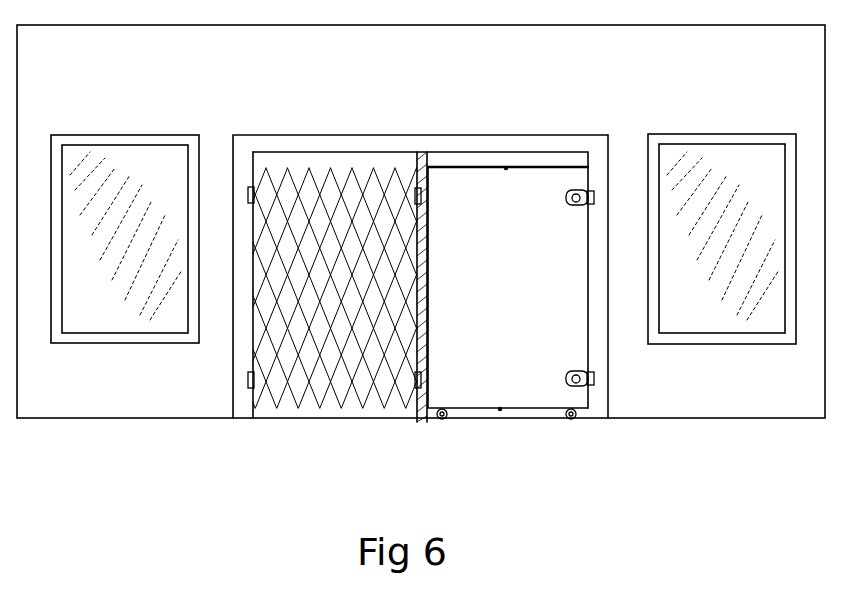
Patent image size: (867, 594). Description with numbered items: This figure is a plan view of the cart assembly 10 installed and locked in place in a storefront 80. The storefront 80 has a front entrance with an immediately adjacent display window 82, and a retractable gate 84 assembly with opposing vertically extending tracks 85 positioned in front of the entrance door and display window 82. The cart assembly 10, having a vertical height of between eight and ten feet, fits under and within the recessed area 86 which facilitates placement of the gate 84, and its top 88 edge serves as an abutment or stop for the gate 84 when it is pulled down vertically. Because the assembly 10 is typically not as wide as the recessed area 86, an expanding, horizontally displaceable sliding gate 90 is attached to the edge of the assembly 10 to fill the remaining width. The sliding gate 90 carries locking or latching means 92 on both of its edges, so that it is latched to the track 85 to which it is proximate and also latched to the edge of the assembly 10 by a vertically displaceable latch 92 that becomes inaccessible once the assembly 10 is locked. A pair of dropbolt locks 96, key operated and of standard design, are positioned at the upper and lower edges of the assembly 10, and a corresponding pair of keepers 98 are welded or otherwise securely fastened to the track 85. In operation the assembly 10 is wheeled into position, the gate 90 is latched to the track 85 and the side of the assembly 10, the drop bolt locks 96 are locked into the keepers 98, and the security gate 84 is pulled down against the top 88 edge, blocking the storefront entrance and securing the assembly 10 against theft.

The cart assembly 10 is at (510, 281).
The storefront 80 is at (523, 101).
The display window 82 is at (293, 347).
The retractable gate 84 is at (420, 142).
The tracks 85 is at (253, 164).
The recessed area 86 is at (248, 143).
The top edge 88 is at (545, 170).
The sliding gate 90 is at (352, 260).
The latch 92 is at (250, 197).
The dropbolt locks 96 is at (572, 207).
The keepers 98 is at (596, 197).